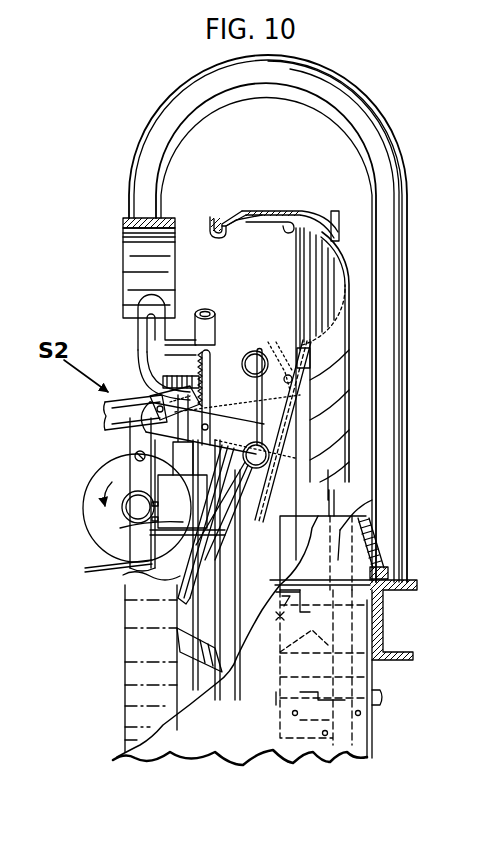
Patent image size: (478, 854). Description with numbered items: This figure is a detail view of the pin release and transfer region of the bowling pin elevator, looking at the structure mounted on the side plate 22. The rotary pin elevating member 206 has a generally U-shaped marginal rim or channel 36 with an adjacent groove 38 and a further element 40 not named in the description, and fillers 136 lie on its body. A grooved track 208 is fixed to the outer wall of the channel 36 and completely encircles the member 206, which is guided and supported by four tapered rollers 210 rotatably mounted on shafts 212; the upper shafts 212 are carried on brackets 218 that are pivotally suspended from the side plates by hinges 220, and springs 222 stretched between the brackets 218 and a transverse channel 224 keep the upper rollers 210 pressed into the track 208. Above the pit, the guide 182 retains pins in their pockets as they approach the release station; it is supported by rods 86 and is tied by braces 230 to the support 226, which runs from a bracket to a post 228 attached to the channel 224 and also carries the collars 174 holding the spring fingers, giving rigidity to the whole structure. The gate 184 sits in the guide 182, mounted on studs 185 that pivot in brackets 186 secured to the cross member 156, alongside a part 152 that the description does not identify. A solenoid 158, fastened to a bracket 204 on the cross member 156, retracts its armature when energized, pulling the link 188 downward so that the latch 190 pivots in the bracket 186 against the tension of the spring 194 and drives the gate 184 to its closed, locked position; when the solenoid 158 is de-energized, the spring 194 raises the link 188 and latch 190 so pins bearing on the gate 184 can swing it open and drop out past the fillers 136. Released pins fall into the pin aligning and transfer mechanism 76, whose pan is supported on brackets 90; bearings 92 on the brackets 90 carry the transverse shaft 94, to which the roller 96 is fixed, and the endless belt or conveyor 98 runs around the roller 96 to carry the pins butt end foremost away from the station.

The side plate 22 is at (115, 759).
The channel 36 is at (338, 245).
The groove 38 is at (212, 222).
The seal 40 is at (225, 224).
The pin aligning and transfer mechanism 76 is at (117, 403).
The rods 86 is at (225, 548).
The brackets 90 is at (146, 562).
The bearings 92 is at (128, 515).
The shaft 94 is at (106, 463).
The roller 96 is at (97, 487).
The endless belt or conveyor 98 is at (92, 568).
The fillers 136 is at (317, 287).
The sleeve 152 is at (210, 332).
The cross member 156 is at (240, 468).
The solenoid 158 is at (195, 512).
The collars 174 is at (190, 648).
The guide 182 is at (242, 356).
The gate 184 is at (271, 344).
The studs 185 is at (209, 428).
The brackets 186 is at (216, 386).
The link 188 is at (140, 437).
The latch 190 is at (203, 402).
The spring 194 is at (197, 363).
The bracket 204 is at (210, 550).
The member 206 is at (276, 206).
The grooved track 208 is at (331, 215).
The rollers 210 is at (280, 651).
The shafts 212 is at (281, 620).
The brackets 218 is at (350, 517).
The hinges 220 is at (280, 712).
The springs 222 is at (381, 548).
The channel 224 is at (374, 628).
The support 226 is at (125, 218).
The post 228 is at (338, 97).
The braces 230 is at (146, 338).